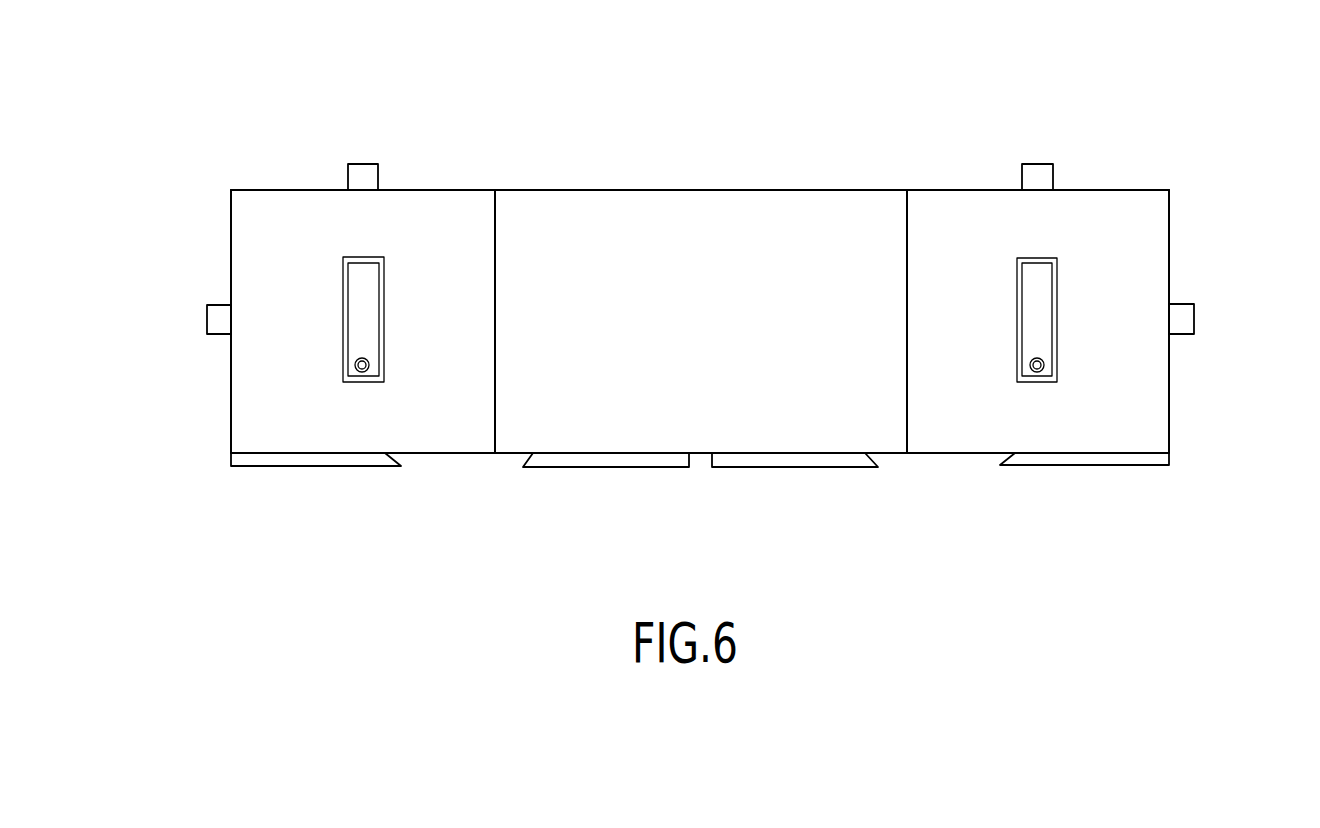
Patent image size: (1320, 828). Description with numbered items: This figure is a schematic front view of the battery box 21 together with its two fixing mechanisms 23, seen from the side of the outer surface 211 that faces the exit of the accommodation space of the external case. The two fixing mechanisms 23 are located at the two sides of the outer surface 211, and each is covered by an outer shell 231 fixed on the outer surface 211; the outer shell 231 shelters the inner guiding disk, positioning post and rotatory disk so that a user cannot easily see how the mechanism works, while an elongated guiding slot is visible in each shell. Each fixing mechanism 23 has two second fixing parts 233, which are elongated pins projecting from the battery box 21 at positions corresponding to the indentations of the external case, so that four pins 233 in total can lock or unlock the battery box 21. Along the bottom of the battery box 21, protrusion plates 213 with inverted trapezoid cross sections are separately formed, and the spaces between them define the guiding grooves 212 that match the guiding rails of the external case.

The battery box 21 is at (690, 182).
The outer surface 211 is at (778, 429).
The guiding groove 212 is at (458, 462).
The protrusion plate 213 is at (300, 458).
The fixing mechanism 23 is at (272, 370).
The outer shell 231 is at (435, 210).
The second fixing part 233 is at (363, 172).